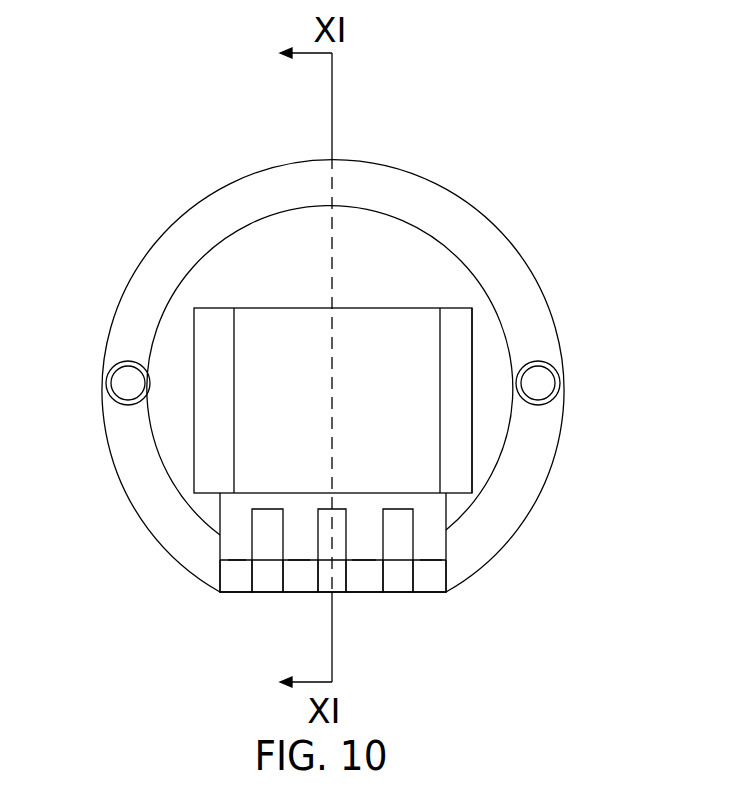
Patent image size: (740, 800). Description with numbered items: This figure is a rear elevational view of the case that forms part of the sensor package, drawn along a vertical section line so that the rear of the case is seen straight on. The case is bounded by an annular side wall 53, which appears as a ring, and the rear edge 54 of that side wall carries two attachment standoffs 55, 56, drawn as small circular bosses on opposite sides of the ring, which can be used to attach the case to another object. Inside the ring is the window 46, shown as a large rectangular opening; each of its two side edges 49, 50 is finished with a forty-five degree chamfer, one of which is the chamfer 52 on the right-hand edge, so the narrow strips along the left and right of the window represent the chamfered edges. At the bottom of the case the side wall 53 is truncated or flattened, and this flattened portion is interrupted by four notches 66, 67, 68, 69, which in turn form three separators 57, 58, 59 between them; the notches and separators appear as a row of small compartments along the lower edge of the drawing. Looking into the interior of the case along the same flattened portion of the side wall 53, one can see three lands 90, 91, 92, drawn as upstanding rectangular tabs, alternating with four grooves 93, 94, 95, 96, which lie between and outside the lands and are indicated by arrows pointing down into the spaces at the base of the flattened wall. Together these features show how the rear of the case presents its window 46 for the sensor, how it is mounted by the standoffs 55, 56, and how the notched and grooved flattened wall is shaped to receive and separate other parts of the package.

The window 46 is at (403, 322).
The side edge 49 is at (429, 437).
The side edge 50 is at (246, 437).
The chamfer 52 is at (460, 458).
The annular side wall 53 is at (413, 184).
The rear edge 54 is at (147, 295).
The attachment standoff 55 is at (122, 383).
The attachment standoff 56 is at (545, 383).
The separator 57 is at (275, 578).
The separator 58 is at (337, 577).
The separator 59 is at (400, 582).
The notch 66 is at (239, 585).
The notch 67 is at (303, 580).
The notch 68 is at (372, 577).
The notch 69 is at (433, 580).
The land 90 is at (267, 555).
The land 91 is at (331, 522).
The land 92 is at (401, 530).
The groove 93 is at (237, 548).
The groove 94 is at (297, 550).
The groove 95 is at (363, 550).
The groove 96 is at (432, 548).